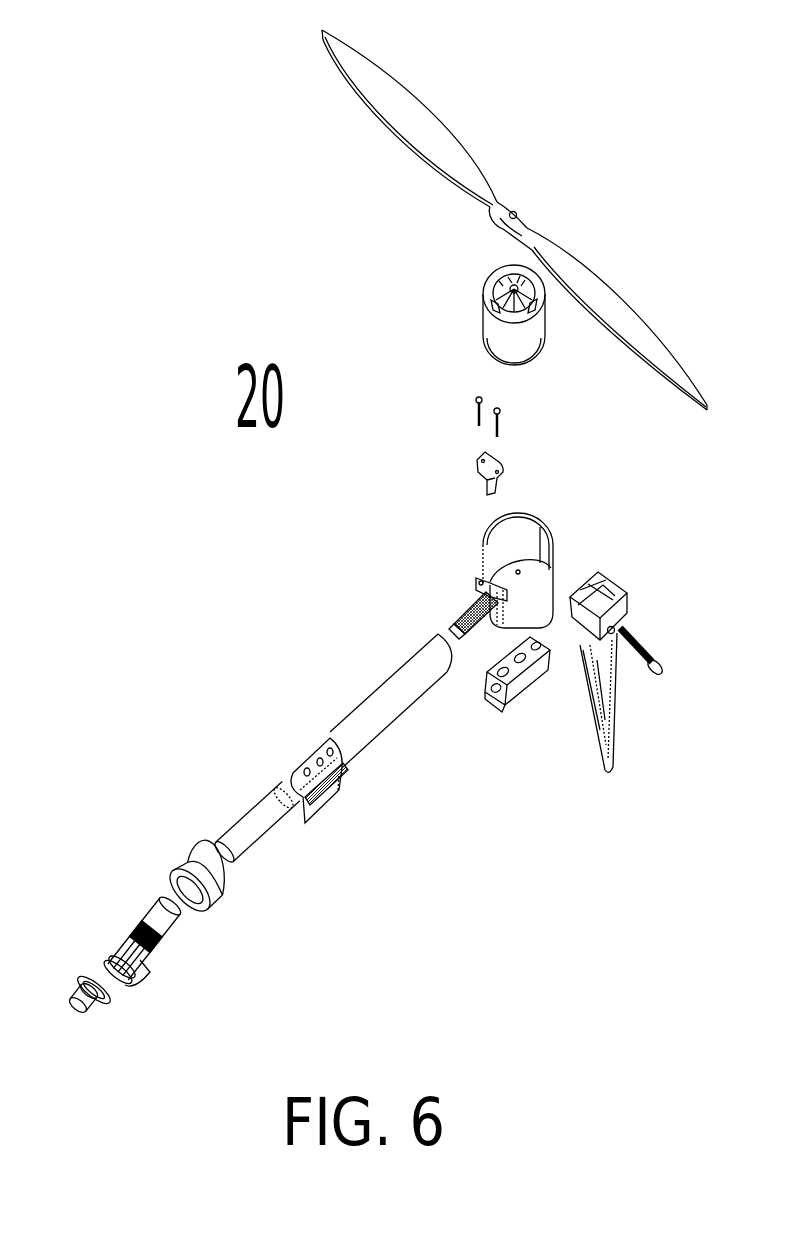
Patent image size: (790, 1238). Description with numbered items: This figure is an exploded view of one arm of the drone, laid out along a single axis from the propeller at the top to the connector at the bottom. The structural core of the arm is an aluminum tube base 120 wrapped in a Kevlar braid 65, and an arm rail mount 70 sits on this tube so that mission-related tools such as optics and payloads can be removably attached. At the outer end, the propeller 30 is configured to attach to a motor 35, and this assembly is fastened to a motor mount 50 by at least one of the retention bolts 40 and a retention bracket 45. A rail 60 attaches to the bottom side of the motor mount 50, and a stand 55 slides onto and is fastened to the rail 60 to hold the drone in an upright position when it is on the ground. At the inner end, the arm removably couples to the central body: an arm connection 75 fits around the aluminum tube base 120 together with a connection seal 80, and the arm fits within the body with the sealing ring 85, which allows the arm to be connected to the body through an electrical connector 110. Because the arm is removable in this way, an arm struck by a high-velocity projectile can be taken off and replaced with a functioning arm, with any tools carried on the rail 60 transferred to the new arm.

The propeller 30 is at (517, 209).
The motor 35 is at (483, 312).
The retention bolts 40 is at (476, 411).
The retention bracket 45 is at (476, 467).
The motor mount 50 is at (483, 544).
The stand 55 is at (612, 589).
The rail 60 is at (523, 695).
The Kevlar braid 65 is at (392, 691).
The arm rail mount 70 is at (311, 761).
The arm connection 75 is at (192, 863).
The connection seal 80 is at (139, 923).
The sealing ring 85 is at (88, 971).
The electrical connector 110 is at (75, 1000).
The aluminum tube 120 is at (257, 840).